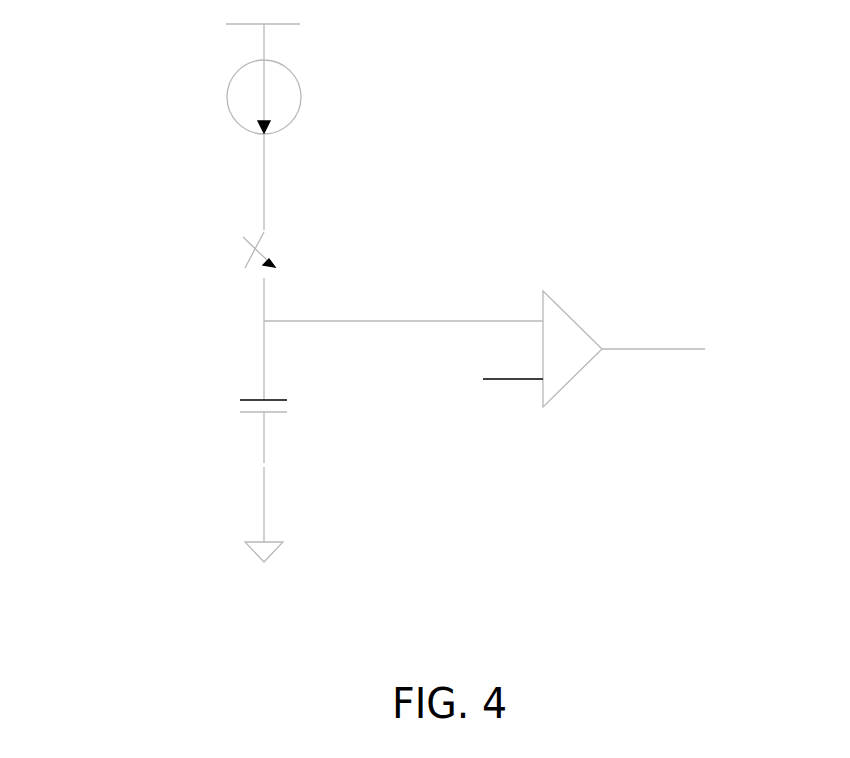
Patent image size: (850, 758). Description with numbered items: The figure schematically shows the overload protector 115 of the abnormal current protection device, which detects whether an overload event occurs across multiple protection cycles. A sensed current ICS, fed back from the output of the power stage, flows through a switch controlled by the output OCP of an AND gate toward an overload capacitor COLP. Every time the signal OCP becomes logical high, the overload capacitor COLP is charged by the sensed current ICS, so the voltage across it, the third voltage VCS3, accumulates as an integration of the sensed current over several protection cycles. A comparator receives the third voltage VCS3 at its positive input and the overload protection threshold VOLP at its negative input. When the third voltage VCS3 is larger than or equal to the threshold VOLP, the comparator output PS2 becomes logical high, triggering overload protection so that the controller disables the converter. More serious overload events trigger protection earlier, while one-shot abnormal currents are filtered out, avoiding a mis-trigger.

The overload protector 115 is at (453, 293).
The sensed current ICS is at (240, 79).
The output of the AND gate OCP is at (190, 249).
The third voltage VCS3 is at (403, 303).
The overload capacitor COLP is at (229, 409).
The overload protection threshold VOLP is at (478, 377).
The output of the comparator PS2 is at (687, 351).